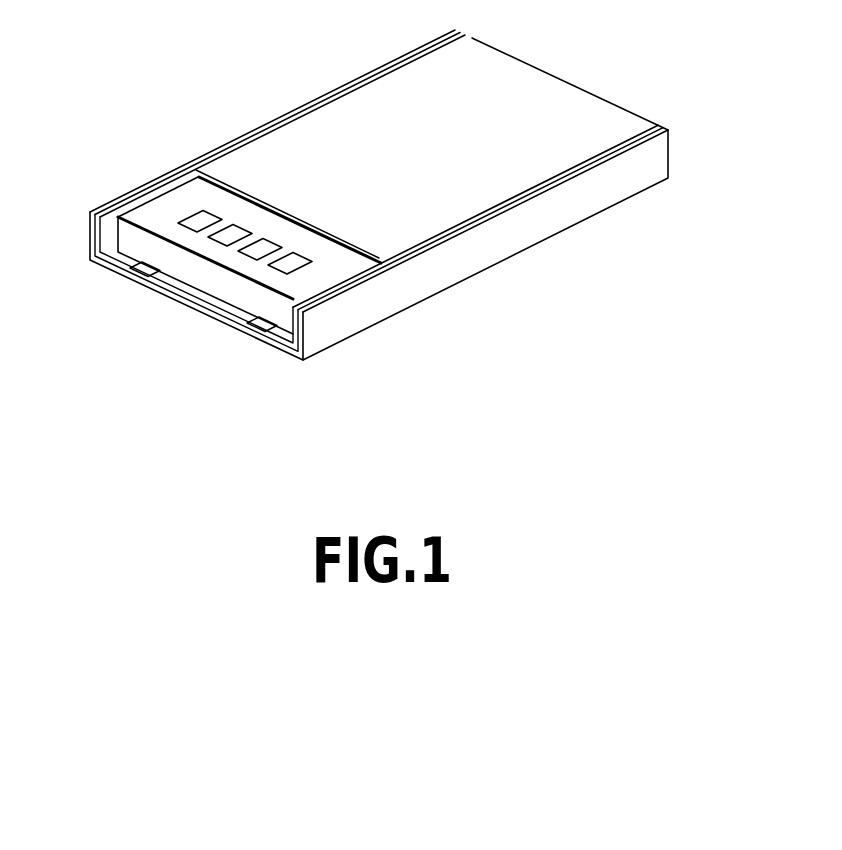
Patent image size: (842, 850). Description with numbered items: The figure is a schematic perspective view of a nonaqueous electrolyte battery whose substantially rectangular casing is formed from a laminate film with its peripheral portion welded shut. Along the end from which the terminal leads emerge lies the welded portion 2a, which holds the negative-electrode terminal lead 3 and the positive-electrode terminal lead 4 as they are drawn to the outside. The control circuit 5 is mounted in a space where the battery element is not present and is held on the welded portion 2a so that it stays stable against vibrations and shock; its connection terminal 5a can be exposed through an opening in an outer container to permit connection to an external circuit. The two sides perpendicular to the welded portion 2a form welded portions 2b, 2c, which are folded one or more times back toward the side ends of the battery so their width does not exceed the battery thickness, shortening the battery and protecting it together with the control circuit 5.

The welded portion 2a is at (197, 294).
The welded portion 2b is at (350, 82).
The welded portion 2c is at (611, 190).
The negative-electrode terminal lead 3 is at (257, 328).
The positive-electrode terminal lead 4 is at (137, 278).
The control circuit 5 is at (162, 212).
The connection terminal 5a is at (300, 262).